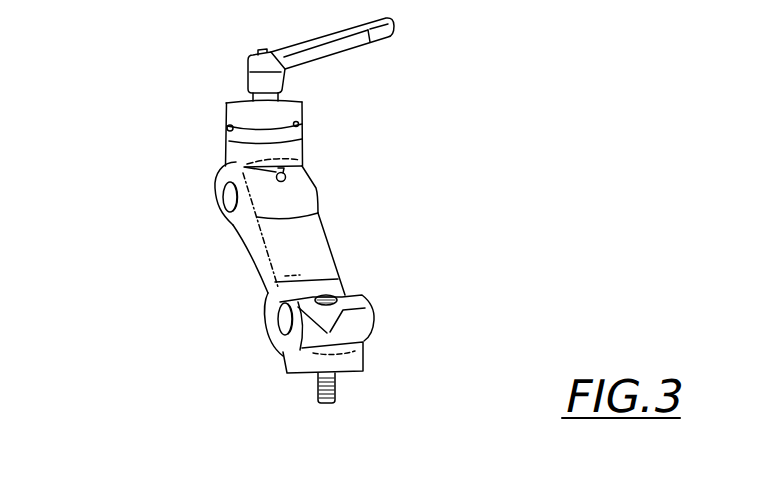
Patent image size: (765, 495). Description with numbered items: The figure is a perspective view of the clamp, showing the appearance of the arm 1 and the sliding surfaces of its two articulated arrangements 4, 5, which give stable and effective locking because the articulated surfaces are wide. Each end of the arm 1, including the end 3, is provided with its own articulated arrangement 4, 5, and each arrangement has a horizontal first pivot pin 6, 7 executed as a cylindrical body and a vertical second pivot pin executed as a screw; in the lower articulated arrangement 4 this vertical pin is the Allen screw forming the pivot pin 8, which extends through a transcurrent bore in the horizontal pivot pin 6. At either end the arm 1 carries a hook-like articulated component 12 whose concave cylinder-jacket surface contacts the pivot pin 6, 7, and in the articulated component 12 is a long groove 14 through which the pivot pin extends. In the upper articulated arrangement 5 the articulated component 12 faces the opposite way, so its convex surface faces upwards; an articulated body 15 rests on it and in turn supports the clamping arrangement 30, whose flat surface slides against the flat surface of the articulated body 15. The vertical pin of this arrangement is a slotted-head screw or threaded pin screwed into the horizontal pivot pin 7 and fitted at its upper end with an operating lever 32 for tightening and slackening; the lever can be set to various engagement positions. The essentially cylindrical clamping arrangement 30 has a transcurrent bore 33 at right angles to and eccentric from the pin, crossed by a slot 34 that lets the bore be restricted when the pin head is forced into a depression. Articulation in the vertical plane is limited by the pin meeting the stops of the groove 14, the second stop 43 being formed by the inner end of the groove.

The clamping arrangement 30 is at (247, 81).
The operating lever 32 is at (395, 26).
The slot 34 is at (176, 75).
The transcurrent bore 33 is at (305, 128).
The articulated body 15 is at (228, 144).
The second articulated arrangement 5 is at (341, 180).
The articulated component 12 is at (216, 178).
The end of the arm 3 is at (243, 191).
The first pivot pin 7 is at (229, 206).
The long groove 14 is at (233, 212).
The second stop 43 is at (277, 181).
The arm 1 is at (313, 237).
The first articulated arrangement 4 is at (383, 316).
The first pivot pin 6 is at (279, 319).
The second pivot pin 8 is at (312, 391).